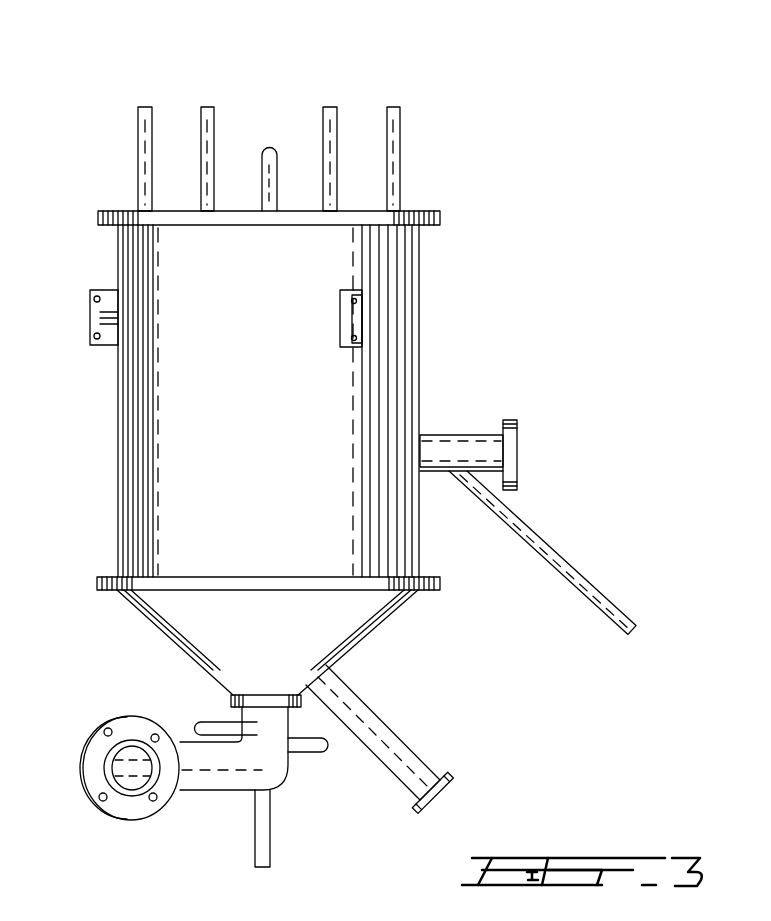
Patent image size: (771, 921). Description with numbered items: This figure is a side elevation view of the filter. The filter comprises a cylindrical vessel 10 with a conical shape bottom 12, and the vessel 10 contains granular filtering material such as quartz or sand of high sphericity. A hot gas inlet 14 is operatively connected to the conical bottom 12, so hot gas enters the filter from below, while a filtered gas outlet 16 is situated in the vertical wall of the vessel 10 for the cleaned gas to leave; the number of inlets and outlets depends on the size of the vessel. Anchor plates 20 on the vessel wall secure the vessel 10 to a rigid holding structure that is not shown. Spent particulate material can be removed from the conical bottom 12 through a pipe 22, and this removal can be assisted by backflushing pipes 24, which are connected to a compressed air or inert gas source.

The cylindrical vessel 10 is at (143, 428).
The conical shape bottom 12 is at (178, 610).
The hot gas inlet 14 is at (198, 790).
The filtered gas outlet 16 is at (456, 446).
The anchor plates 20 is at (92, 322).
The pipe 22 is at (393, 742).
The backflushing pipes 24 is at (393, 107).